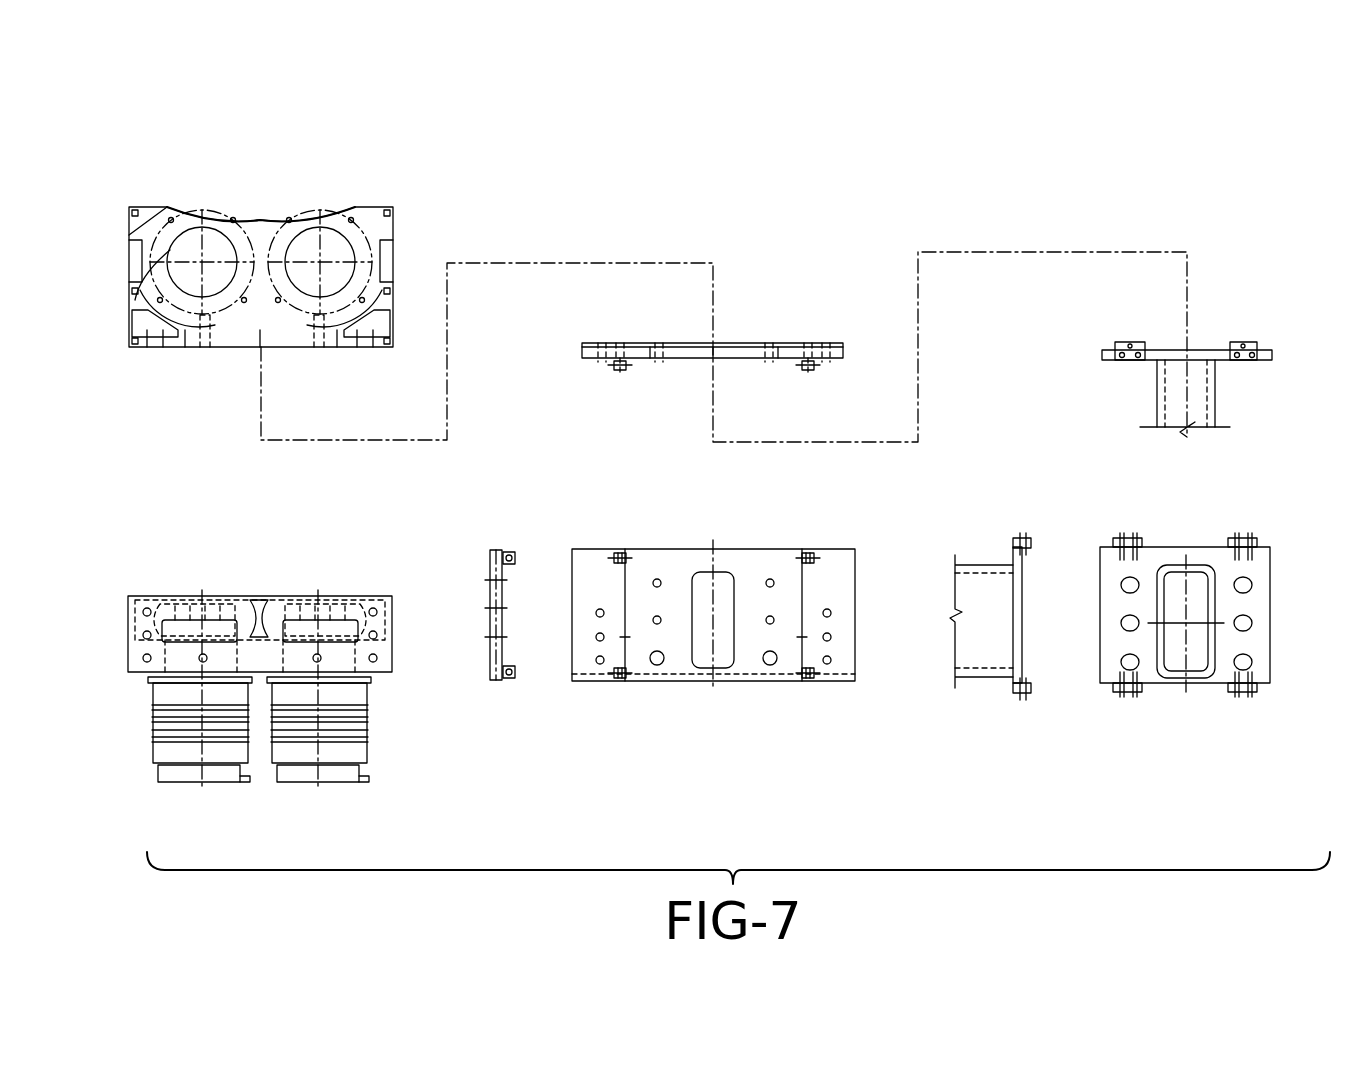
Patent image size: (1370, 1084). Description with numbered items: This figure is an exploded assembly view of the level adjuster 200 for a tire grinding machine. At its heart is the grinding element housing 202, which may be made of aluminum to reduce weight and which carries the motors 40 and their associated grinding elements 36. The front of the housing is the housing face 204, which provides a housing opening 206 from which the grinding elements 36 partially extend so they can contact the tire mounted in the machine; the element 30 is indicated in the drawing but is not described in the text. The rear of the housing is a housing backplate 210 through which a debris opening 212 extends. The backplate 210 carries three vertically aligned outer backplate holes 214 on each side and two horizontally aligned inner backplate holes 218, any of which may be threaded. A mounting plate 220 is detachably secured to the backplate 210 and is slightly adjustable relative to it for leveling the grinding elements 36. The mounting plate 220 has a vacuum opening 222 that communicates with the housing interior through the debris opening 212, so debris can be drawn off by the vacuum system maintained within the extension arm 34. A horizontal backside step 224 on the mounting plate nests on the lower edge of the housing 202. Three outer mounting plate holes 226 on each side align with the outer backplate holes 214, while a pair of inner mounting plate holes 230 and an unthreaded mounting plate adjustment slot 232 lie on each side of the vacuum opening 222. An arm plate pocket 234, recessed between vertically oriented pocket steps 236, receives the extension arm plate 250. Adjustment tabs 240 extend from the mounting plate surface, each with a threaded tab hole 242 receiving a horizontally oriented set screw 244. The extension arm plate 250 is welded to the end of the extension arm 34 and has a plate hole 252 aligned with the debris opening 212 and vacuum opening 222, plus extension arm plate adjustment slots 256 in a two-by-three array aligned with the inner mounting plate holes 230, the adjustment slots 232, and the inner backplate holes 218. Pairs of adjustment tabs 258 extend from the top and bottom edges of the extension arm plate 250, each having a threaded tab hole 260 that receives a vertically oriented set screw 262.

The frame member 30 is at (327, 150).
The extension arm 34 is at (1216, 392).
The grinding elements 36 is at (160, 224).
The motors 40 is at (216, 774).
The level adjuster 200 is at (708, 172).
The grinding element housing 202 is at (330, 316).
The housing face 204 is at (268, 212).
The housing opening 206 is at (222, 195).
The housing backplate 210 is at (261, 598).
The debris opening 212 is at (260, 612).
The outer backplate holes 214 is at (143, 658).
The inner backplate holes 218 is at (200, 655).
The mounting plate 220 is at (666, 523).
The vacuum opening 222 is at (704, 562).
The horizontal backside step 224 is at (489, 664).
The outer mounting plate holes 226 is at (596, 660).
The inner mounting plate holes 230 is at (655, 617).
The mounting plate adjustment slots 232 is at (659, 664).
The arm plate pocket 234 is at (744, 563).
The pocket steps 236 is at (626, 641).
The adjustment tabs 240 is at (620, 370).
The threaded tab hole 242 is at (619, 356).
The set screw 244 is at (616, 367).
The extension arm plate 250 is at (1126, 512).
The plate hole 252 is at (1191, 600).
The extension arm plate adjustment slots 256 is at (1121, 662).
The adjustment tabs 258 is at (1139, 341).
The threaded tab hole 260 is at (1128, 345).
The set screw 262 is at (1025, 534).